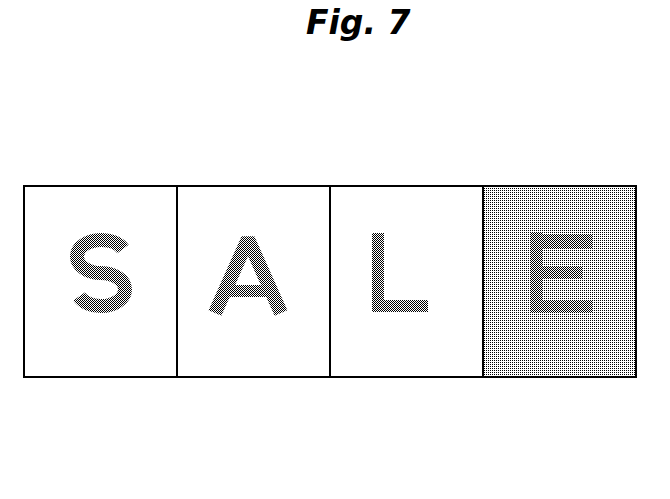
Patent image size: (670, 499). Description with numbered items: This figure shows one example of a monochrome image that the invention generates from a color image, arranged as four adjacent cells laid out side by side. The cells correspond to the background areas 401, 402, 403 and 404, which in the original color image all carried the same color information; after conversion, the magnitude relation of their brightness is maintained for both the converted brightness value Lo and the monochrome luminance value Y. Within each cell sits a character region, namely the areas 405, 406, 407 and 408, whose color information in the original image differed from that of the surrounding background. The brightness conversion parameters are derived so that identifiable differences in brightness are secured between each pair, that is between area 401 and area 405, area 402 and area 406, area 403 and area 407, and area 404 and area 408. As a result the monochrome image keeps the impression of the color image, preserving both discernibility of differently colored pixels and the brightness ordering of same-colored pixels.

The area of monochrome image 401 is at (118, 198).
The area of monochrome image 402 is at (280, 198).
The area of monochrome image 403 is at (432, 198).
The area of monochrome image 404 is at (604, 198).
The area of monochrome image 405 is at (102, 309).
The area of monochrome image 406 is at (222, 298).
The area of monochrome image 407 is at (402, 309).
The area of monochrome image 408 is at (567, 309).